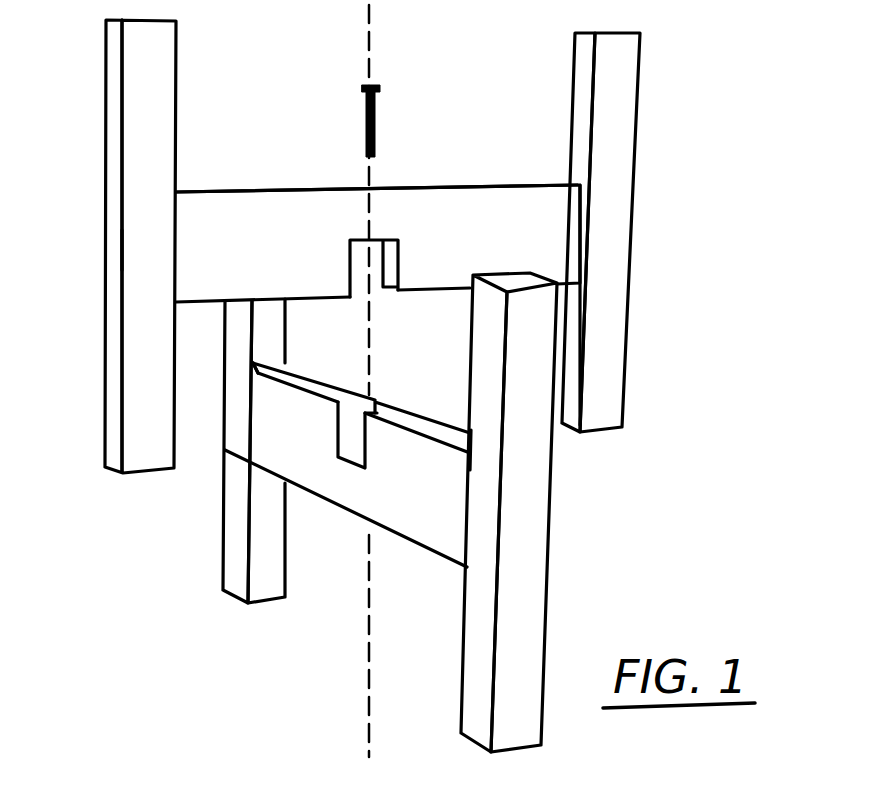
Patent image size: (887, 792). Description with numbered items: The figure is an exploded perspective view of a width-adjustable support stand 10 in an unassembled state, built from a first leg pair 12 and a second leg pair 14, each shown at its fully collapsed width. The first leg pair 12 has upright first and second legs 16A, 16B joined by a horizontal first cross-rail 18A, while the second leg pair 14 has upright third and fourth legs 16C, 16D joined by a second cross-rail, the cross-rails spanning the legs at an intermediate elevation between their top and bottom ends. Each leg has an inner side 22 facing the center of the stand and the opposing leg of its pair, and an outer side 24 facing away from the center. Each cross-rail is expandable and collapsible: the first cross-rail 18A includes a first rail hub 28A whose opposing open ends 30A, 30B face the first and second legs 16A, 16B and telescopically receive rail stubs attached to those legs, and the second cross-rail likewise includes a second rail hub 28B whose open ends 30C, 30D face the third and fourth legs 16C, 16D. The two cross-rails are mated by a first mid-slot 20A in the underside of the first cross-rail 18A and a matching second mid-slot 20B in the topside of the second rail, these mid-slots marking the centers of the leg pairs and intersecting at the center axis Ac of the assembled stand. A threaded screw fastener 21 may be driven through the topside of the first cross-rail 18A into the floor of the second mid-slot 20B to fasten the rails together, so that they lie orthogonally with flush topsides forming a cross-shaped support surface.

The width-adjustable support stand 10 is at (401, 384).
The first leg pair 12 is at (382, 386).
The second leg pair 14 is at (385, 518).
The first leg 16A is at (148, 163).
The second leg 16B is at (607, 180).
The third leg 16C is at (535, 598).
The fourth leg 16D is at (230, 528).
The first cross-rail 18A is at (460, 177).
The first mid-slot 20A is at (360, 293).
The second mid-slot 20B is at (387, 402).
The threaded screw fastener 21 is at (378, 118).
The inner side 22 is at (583, 70).
The outer side 24 is at (118, 360).
The first rail hub 28A is at (297, 213).
The second rail hub 28B is at (433, 523).
The first open end 30A is at (152, 248).
The second open end 30B is at (585, 247).
The third open end 30C is at (467, 480).
The fourth open end 30D is at (246, 447).
The center axis Ac is at (377, 52).